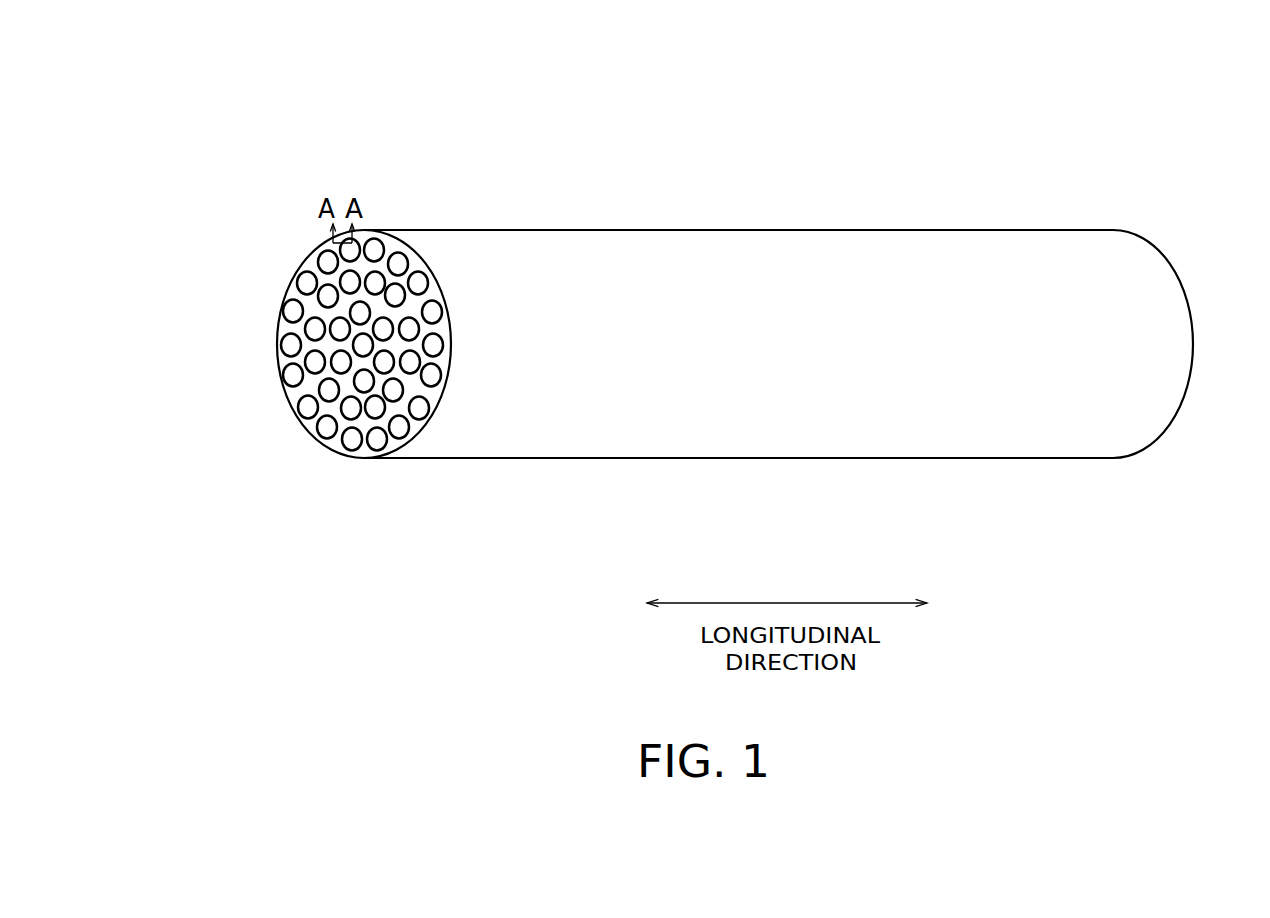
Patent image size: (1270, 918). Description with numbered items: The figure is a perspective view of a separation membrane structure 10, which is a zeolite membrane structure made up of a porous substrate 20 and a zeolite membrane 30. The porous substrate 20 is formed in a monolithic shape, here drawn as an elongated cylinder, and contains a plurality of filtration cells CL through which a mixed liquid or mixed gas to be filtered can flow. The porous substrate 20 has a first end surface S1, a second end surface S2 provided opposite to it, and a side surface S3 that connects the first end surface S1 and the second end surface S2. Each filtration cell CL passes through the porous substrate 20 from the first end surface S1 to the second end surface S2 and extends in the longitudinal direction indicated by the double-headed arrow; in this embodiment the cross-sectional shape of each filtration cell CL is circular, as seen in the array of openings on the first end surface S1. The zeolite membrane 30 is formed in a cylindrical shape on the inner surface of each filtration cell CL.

The separation membrane structure 10 is at (700, 286).
The porous substrate 20 is at (760, 433).
The zeolite membrane 30 is at (400, 425).
The first end surface S1 is at (295, 397).
The second end surface S2 is at (1197, 313).
The side surface S3 is at (868, 253).
The filtration cell CL is at (353, 443).